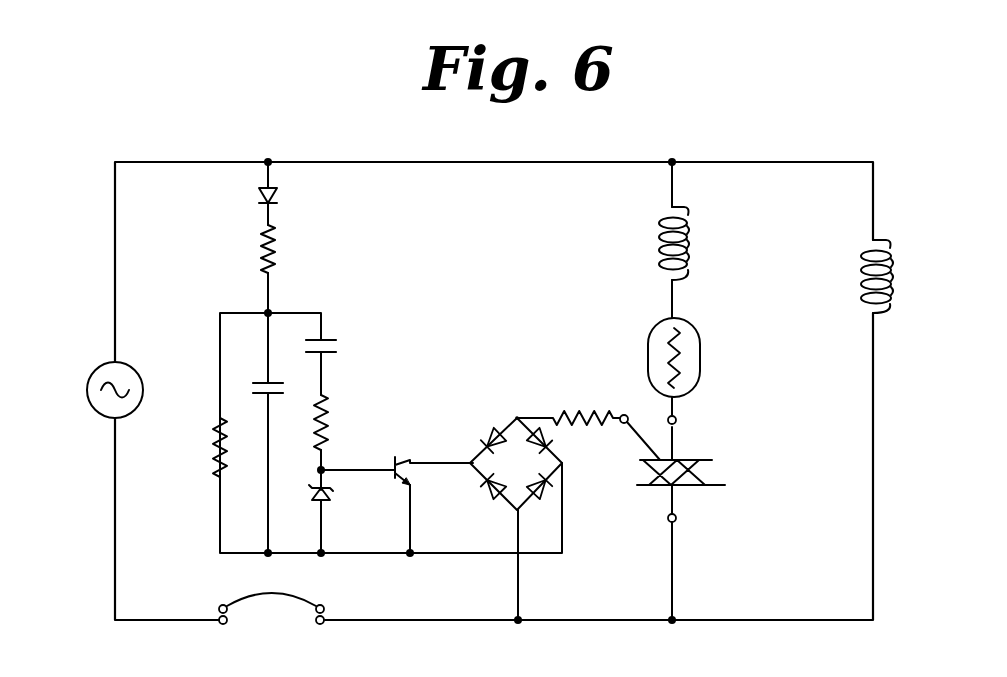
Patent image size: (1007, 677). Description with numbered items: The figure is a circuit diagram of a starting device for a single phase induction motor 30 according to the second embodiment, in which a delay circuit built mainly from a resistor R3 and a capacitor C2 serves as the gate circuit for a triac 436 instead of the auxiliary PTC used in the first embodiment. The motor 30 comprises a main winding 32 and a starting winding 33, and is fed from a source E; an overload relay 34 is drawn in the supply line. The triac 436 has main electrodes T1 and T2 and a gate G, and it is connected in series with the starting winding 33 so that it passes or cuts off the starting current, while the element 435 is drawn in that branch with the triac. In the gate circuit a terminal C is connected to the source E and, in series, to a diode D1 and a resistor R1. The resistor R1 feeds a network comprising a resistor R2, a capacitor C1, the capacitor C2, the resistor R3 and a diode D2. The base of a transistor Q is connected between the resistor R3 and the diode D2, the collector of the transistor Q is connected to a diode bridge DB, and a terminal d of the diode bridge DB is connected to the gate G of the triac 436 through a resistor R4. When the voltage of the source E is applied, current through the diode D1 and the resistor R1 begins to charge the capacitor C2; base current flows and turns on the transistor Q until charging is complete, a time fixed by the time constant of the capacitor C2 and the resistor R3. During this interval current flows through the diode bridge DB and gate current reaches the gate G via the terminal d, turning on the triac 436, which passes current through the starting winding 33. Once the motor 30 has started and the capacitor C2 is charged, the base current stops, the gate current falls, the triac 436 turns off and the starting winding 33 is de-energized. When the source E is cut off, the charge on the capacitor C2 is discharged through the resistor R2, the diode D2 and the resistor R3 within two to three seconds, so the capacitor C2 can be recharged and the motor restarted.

The terminal C is at (268, 160).
The diode D1 is at (278, 190).
The resistor R1 is at (278, 250).
The capacitor C1 is at (262, 376).
The capacitor C2 is at (338, 343).
The source E is at (92, 372).
The resistor R2 is at (212, 447).
The resistor R3 is at (330, 425).
The diode D2 is at (331, 494).
The transistor Q is at (402, 467).
The diode bridge DB is at (506, 420).
The terminal d is at (518, 414).
The resistor R4 is at (572, 410).
The gate G is at (637, 425).
The main electrode T1 is at (679, 423).
The triac 436 is at (714, 462).
The main electrode T2 is at (679, 518).
The lamp / resistive load element 435 is at (702, 356).
The starting winding 33 is at (690, 243).
The main winding 32 is at (860, 258).
The single phase induction motor 30 is at (772, 170).
The overload relay 34 is at (240, 598).